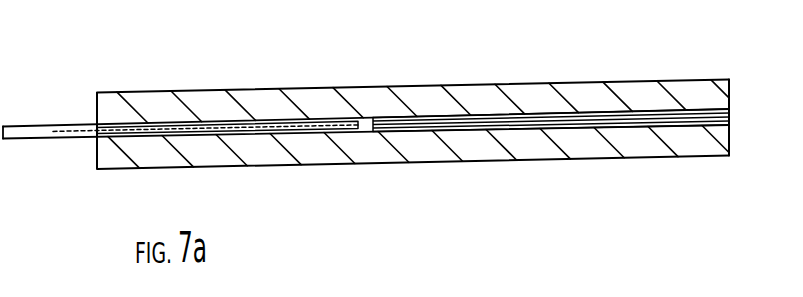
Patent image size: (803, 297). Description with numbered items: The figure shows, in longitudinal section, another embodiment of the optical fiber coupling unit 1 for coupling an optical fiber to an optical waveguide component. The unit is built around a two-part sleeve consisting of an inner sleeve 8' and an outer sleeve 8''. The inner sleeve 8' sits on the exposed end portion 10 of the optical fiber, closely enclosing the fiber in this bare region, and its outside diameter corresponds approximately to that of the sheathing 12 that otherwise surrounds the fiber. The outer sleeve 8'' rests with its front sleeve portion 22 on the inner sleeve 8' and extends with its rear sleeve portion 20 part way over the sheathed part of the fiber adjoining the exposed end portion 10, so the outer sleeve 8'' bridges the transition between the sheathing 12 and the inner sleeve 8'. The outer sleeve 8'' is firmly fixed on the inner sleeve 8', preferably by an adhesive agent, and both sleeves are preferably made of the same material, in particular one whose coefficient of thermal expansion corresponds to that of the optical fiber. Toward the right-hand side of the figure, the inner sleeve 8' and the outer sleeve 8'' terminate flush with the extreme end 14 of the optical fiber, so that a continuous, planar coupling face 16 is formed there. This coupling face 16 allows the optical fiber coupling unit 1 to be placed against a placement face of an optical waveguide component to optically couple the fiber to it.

The optical fiber coupling unit 1 is at (452, 182).
The inner sleeve 8' is at (551, 162).
The outer sleeve 8'' is at (418, 127).
The exposed end portion 10 is at (620, 120).
The sheathing 12 is at (33, 132).
The extreme end 14 is at (731, 119).
The coupling face 16 is at (729, 92).
The rear sleeve portion 20 is at (258, 148).
The front sleeve portion 22 is at (623, 90).